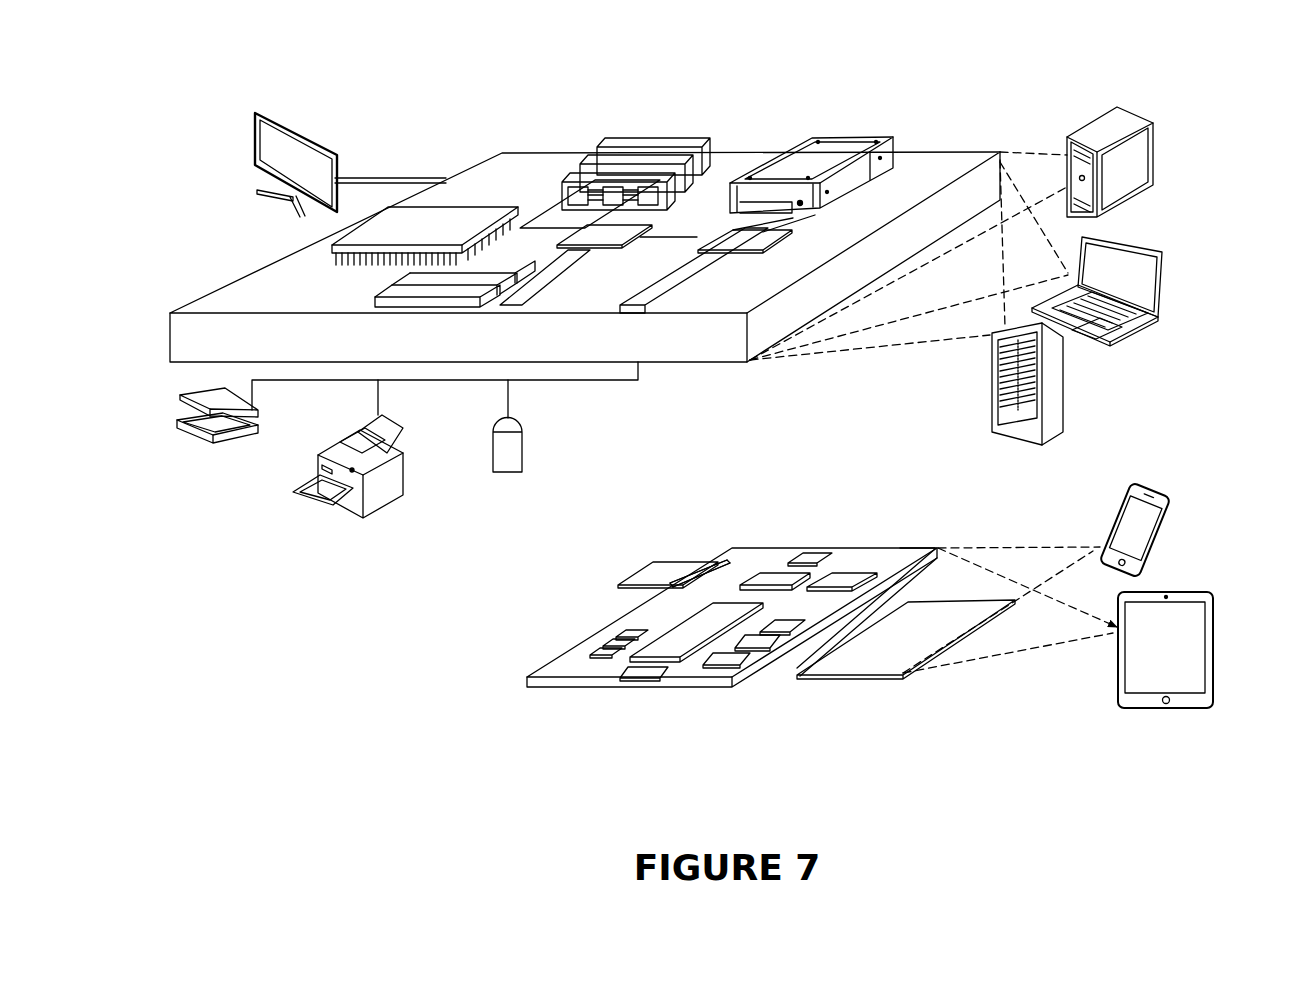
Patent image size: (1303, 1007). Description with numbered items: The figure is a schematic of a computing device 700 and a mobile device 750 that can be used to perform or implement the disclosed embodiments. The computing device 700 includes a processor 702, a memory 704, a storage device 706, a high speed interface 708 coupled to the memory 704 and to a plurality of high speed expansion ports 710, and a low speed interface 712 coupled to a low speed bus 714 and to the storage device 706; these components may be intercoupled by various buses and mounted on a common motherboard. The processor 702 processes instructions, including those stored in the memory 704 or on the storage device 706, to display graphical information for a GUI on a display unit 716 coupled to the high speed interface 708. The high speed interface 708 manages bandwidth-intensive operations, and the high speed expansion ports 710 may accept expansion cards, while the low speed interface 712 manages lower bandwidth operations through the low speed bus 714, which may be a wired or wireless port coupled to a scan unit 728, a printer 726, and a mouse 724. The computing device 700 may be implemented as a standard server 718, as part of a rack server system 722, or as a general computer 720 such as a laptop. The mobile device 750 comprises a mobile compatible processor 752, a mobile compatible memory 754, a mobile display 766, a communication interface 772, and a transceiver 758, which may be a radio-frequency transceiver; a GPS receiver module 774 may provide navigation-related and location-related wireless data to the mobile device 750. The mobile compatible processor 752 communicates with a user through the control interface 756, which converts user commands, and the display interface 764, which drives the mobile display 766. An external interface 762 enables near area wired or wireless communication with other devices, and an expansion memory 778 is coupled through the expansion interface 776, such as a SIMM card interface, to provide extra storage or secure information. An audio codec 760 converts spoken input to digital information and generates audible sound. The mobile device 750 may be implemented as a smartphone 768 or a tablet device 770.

The computing device 700 is at (452, 152).
The processor 702 is at (387, 253).
The memory 704 is at (628, 147).
The storage device 706 is at (810, 137).
The high speed interface 708 is at (583, 233).
The high speed expansion ports 710 is at (403, 292).
The low speed interface 712 is at (762, 250).
The low speed bus 714 is at (650, 313).
The display unit 716 is at (255, 113).
The standard server 718 is at (1153, 130).
The general computer 720 is at (1162, 257).
The rack server system 722 is at (992, 402).
The mouse 724 is at (508, 472).
The printer 726 is at (357, 520).
The scan unit 728 is at (177, 422).
The mobile device 750 is at (525, 674).
The mobile compatible processor 752 is at (673, 660).
The mobile compatible memory 754 is at (598, 645).
The control interface 756 is at (763, 650).
The transceiver 758 is at (903, 548).
The audio codec 760 is at (787, 640).
The external interface 762 is at (643, 677).
The display interface 764 is at (733, 673).
The mobile display 766 is at (903, 673).
The smartphone 768 is at (1122, 490).
The tablet device 770 is at (1163, 707).
The communication interface 772 is at (773, 578).
The receiver module 774 is at (803, 547).
The expansion interface 776 is at (717, 562).
The expansion memory 778 is at (620, 582).